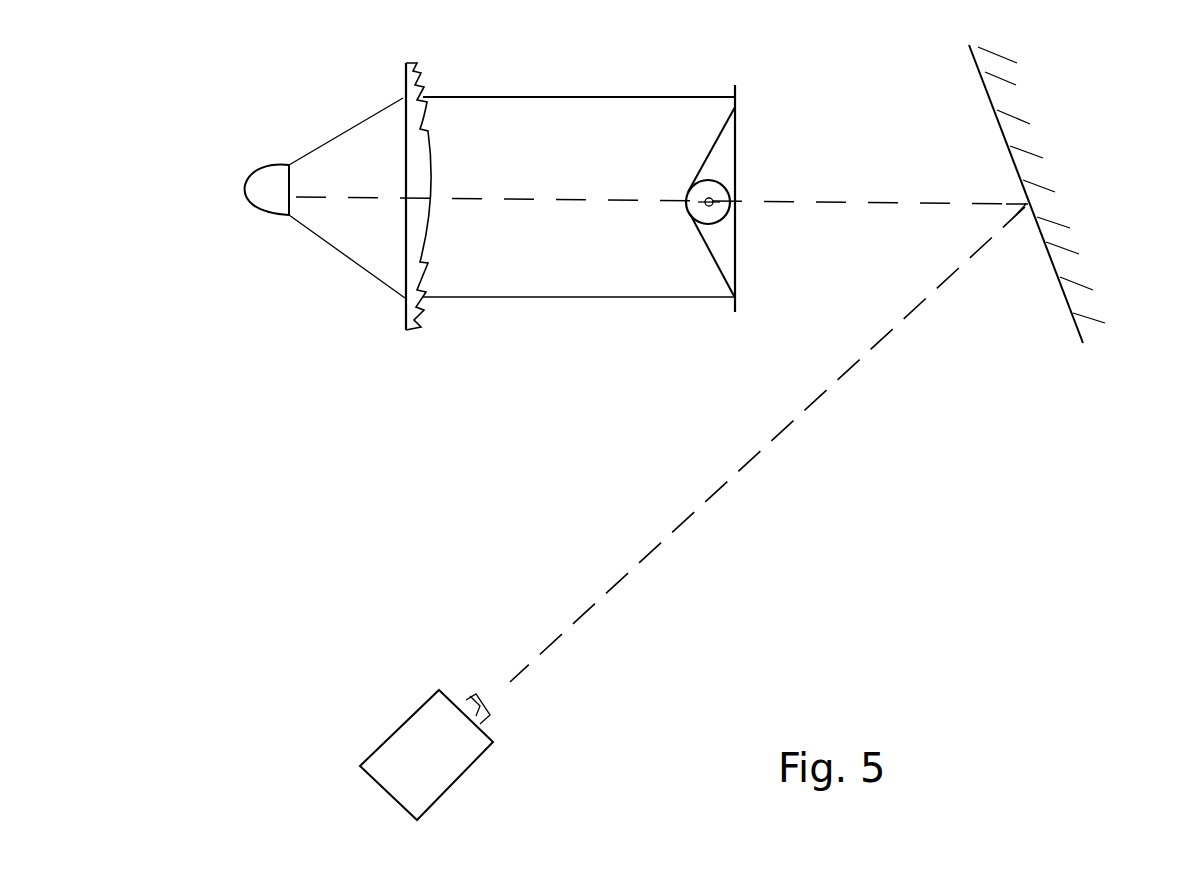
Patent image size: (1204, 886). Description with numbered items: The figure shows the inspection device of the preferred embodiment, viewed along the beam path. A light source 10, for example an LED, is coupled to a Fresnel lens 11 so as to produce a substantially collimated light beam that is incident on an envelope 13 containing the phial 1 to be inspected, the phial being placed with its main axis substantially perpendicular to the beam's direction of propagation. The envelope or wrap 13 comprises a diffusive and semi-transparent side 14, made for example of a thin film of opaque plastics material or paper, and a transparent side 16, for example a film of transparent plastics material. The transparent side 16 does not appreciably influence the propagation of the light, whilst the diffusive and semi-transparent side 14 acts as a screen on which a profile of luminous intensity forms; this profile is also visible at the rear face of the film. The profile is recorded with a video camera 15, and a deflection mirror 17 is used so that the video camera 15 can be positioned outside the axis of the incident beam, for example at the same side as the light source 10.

The phial 1 is at (700, 212).
The light source 10 is at (257, 200).
The Fresnel lens 11 is at (413, 330).
The envelope 13 is at (724, 262).
The diffusive and semi-transparent side 14 is at (737, 149).
The video camera 15 is at (467, 753).
The transparent side 16 is at (713, 134).
The deflection mirror 17 is at (1085, 333).